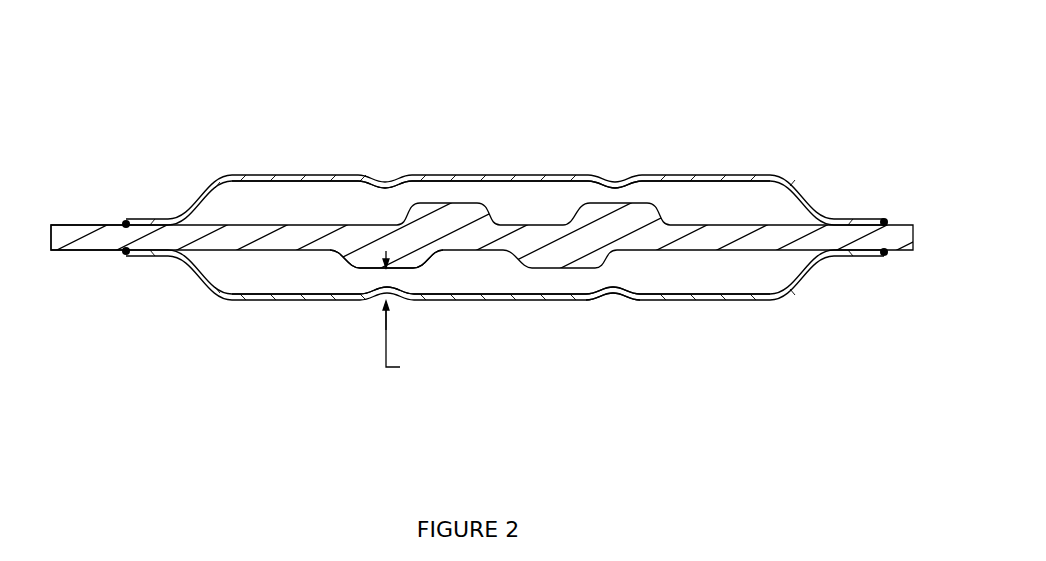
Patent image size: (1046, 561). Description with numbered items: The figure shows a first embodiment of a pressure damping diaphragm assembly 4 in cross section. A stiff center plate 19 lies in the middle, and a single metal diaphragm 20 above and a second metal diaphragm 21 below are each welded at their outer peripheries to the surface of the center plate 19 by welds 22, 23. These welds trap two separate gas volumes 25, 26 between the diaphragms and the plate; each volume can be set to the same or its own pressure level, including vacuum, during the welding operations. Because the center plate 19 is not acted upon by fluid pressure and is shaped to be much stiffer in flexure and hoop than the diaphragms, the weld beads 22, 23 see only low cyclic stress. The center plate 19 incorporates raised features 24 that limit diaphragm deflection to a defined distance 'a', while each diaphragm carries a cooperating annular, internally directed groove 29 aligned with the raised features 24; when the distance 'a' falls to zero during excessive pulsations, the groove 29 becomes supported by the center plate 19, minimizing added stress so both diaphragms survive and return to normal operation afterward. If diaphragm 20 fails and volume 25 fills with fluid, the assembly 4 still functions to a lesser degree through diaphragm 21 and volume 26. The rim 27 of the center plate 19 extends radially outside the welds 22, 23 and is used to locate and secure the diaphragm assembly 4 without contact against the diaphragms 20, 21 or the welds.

The diaphragm assembly 4 is at (616, 113).
The center plate 19 is at (481, 215).
The metal diaphragm 20 is at (221, 167).
The metal diaphragm 21 is at (197, 297).
The weld 22 is at (889, 209).
The weld 23 is at (893, 265).
The raised feature 24 is at (347, 279).
The gas volume 25 is at (705, 200).
The gas volume 26 is at (259, 268).
The rim 27 is at (71, 214).
The annular groove 29 is at (625, 305).